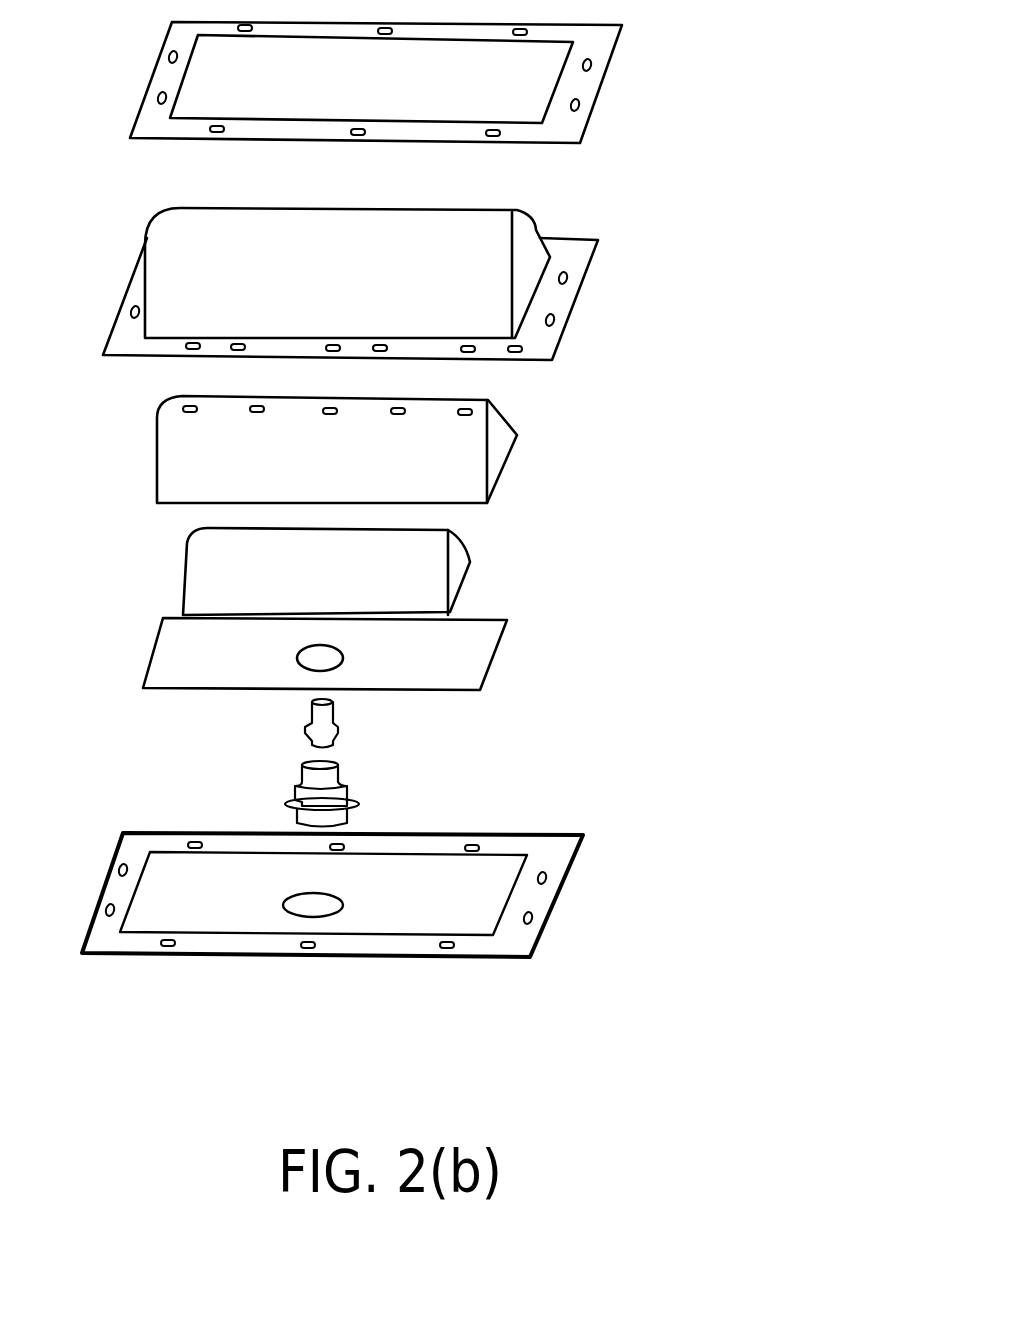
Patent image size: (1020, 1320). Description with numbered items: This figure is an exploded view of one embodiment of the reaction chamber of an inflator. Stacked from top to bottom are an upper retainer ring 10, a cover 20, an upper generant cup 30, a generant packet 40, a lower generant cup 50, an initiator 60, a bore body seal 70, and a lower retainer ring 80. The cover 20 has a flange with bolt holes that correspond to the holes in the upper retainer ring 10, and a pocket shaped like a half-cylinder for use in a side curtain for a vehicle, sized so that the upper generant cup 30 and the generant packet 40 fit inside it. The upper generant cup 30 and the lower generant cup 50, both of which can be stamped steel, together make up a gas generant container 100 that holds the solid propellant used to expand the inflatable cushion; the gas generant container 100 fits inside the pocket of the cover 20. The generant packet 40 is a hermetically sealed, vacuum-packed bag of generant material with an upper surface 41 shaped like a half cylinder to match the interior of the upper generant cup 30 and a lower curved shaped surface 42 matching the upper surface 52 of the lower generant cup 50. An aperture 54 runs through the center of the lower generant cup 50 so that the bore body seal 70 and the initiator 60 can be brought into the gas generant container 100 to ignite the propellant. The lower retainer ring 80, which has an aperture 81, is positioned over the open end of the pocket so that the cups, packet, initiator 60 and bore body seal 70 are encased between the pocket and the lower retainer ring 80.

The upper retainer ring 10 is at (723, 77).
The cover 20 is at (622, 237).
The upper generant cup 30 is at (703, 450).
The generant packet 40 is at (707, 587).
The upper surface 41 is at (403, 567).
The lower curved shaped surface 42 is at (463, 592).
The lower generant cup 50 is at (717, 672).
The upper surface 52 is at (460, 670).
The aperture 54 is at (317, 662).
The initiator 60 is at (713, 738).
The bore body seal 70 is at (713, 795).
The lower retainer ring 80 is at (717, 893).
The aperture 81 is at (297, 917).
The gas generant container 100 is at (145, 468).